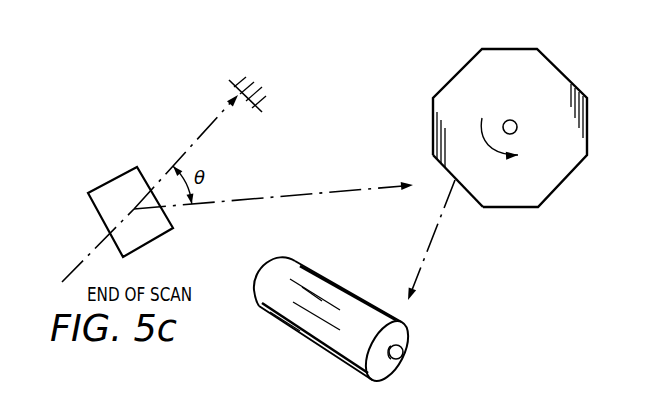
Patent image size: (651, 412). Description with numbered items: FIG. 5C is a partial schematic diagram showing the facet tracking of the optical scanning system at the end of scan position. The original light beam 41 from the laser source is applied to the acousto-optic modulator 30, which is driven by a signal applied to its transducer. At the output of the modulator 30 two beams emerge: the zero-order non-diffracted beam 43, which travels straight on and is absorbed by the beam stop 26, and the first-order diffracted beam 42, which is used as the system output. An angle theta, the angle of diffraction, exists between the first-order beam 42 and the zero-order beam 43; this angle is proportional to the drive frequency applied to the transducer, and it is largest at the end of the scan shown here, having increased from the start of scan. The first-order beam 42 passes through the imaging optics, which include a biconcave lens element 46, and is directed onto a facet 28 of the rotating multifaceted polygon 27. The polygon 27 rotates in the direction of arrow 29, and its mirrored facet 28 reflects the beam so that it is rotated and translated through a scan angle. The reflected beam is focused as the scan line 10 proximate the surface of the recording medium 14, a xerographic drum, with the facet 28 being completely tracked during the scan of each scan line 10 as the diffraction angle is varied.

The scan line 10 is at (352, 296).
The recording medium 14 is at (284, 331).
The beam stop 26 is at (233, 86).
The rotating multifaceted polygon 27 is at (508, 48).
The facet 28 is at (452, 178).
The arrow indicating direction of rotation 29 is at (491, 150).
The acousto-optic modulator 30 is at (107, 182).
The light beam 41 is at (80, 266).
The first-order diffracted beam 42 is at (280, 195).
The zero-order non-diffracted beam 43 is at (190, 148).
The biconcave lens element 46 is at (443, 208).